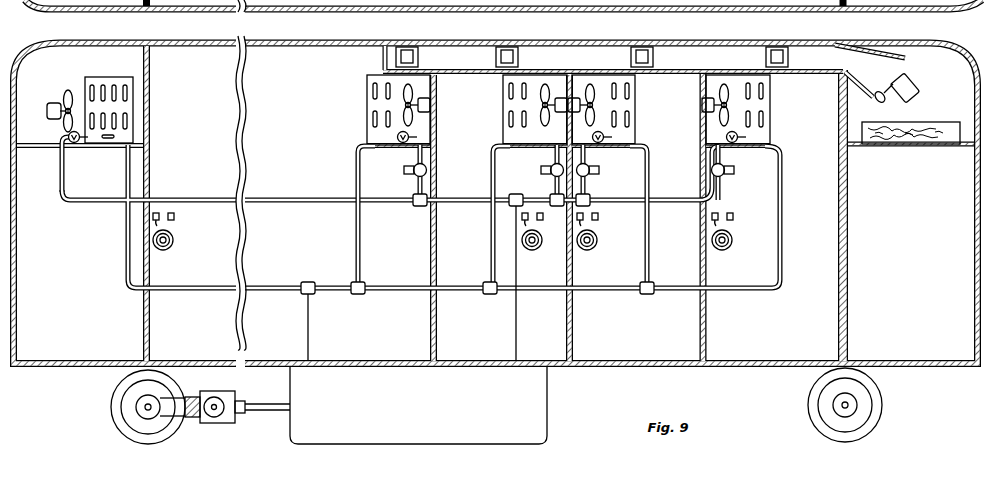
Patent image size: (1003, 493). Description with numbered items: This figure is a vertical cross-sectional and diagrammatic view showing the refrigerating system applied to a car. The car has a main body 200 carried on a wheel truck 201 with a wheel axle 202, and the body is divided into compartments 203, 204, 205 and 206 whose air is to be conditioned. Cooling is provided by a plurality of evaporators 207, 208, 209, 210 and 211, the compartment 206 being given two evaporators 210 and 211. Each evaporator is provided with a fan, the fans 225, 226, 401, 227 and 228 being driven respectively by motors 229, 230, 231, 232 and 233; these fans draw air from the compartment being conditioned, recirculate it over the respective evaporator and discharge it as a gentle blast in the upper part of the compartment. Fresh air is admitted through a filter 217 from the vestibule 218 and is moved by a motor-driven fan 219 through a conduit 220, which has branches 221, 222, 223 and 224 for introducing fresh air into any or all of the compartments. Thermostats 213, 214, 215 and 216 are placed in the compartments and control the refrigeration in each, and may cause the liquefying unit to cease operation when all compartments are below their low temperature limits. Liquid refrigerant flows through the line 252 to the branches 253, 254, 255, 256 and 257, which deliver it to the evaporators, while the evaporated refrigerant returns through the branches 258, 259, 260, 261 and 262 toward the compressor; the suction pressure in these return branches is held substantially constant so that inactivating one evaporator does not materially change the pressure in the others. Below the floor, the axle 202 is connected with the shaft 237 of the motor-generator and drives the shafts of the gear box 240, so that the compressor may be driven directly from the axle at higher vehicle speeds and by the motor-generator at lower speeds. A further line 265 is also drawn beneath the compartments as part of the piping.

The main body 200 is at (381, 43).
The wheel truck 201 is at (200, 393).
The wheel axle 202 is at (140, 406).
The compartment 203 is at (799, 155).
The compartment 204 is at (663, 132).
The compartment 205 is at (451, 134).
The compartment 206 is at (268, 122).
The evaporator 207 is at (772, 94).
The evaporator 208 is at (640, 100).
The evaporator 209 is at (502, 97).
The evaporator 210 is at (370, 101).
The evaporator 211 is at (112, 75).
The thermostat 213 is at (730, 250).
The thermostat 214 is at (594, 248).
The thermostat 215 is at (536, 248).
The thermostat 216 is at (176, 248).
The filter 217 is at (937, 120).
The vestibule 218 is at (893, 207).
The motor-driven fan 219 is at (905, 71).
The conduit 220 is at (717, 47).
The branch 221 is at (778, 46).
The branch 222 is at (641, 46).
The branch 223 is at (503, 46).
The branch 224 is at (395, 55).
The fan 225 is at (772, 108).
The fan 226 is at (640, 110).
The fan 227 is at (396, 125).
The fan 228 is at (68, 91).
The motor 229 is at (720, 101).
The motor 230 is at (585, 102).
The motor 231 is at (551, 102).
The motor 232 is at (414, 102).
The motor 233 is at (50, 103).
The shaft 237 is at (268, 403).
The gear box 240 is at (222, 420).
The line 252 is at (514, 333).
The branch 253 is at (60, 175).
The branch 254 is at (414, 181).
The branch 255 is at (550, 176).
The branch 256 is at (593, 177).
The branch 257 is at (726, 178).
The branch 258 is at (124, 180).
The branch 259 is at (354, 177).
The branch 260 is at (490, 177).
The branch 261 is at (650, 168).
The branch 262 is at (780, 187).
The drain pipe 265 is at (310, 325).
The fan 401 is at (502, 108).